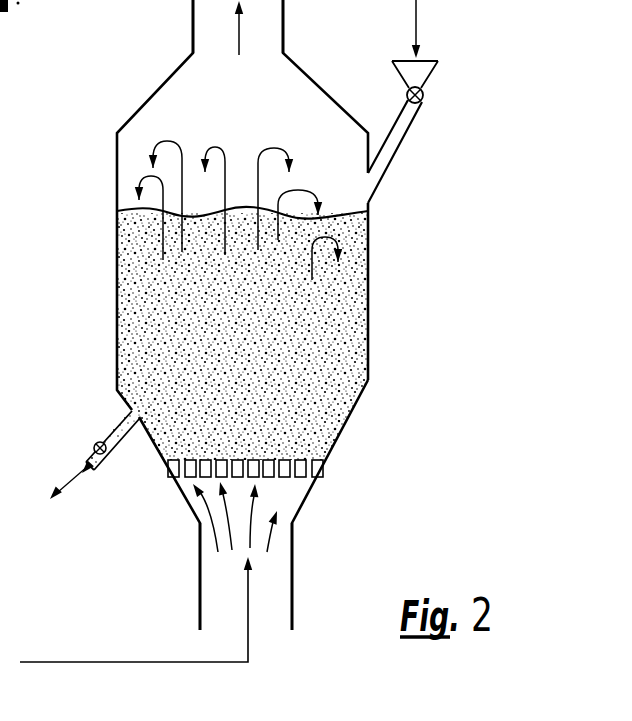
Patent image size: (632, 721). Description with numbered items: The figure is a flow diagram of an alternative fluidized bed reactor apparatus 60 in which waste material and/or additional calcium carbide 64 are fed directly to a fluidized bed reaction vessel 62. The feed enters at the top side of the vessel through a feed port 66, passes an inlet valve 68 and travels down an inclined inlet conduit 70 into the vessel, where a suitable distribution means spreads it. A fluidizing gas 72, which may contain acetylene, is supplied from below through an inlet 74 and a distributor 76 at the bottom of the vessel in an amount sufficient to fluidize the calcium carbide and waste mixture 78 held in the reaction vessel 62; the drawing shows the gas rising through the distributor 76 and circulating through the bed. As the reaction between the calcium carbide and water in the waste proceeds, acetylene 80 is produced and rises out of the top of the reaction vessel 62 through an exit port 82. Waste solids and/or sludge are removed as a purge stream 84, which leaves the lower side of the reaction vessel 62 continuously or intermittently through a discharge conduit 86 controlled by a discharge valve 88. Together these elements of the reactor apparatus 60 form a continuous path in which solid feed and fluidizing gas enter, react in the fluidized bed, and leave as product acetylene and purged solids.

The reactor apparatus 60 is at (378, 468).
The fluidized bed reaction vessel 62 is at (368, 269).
The waste material and/or additional calcium carbide 64 is at (417, 9).
The feed port 66 is at (439, 62).
The inlet valve 68 is at (424, 97).
The inlet conduit 70 is at (391, 157).
The fluidizing gas 72 is at (117, 661).
The inlet 74 is at (293, 568).
The distributor 76 is at (284, 478).
The calcium carbide and waste mixture 78 is at (352, 335).
The acetylene 80 is at (239, 55).
The exit port 82 is at (284, 22).
The purge stream 84 is at (73, 477).
The discharge conduit 86 is at (118, 423).
The discharge valve 88 is at (94, 447).